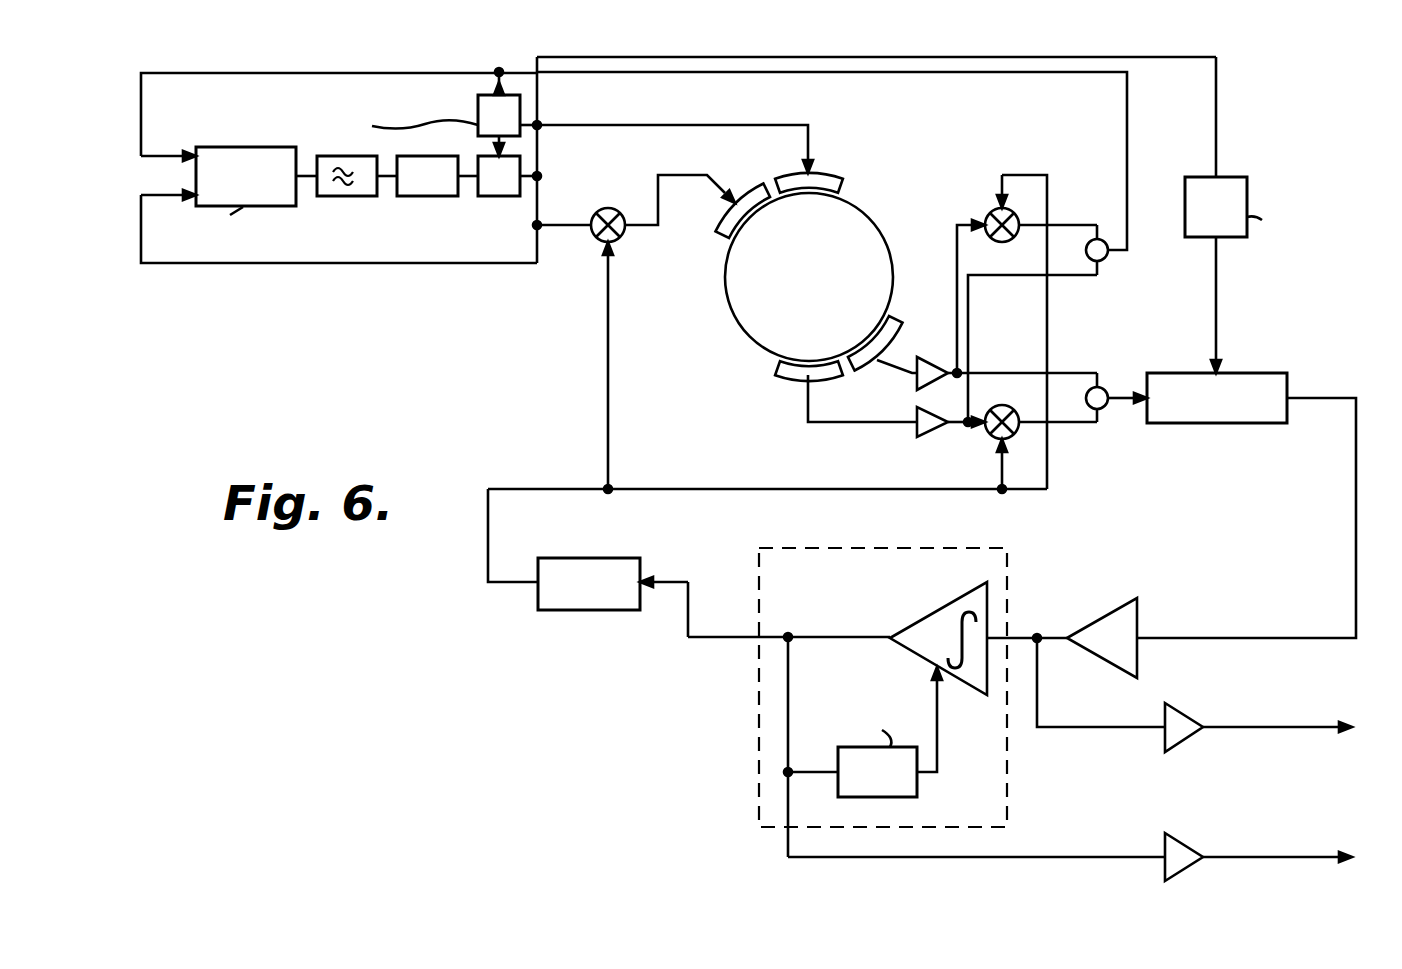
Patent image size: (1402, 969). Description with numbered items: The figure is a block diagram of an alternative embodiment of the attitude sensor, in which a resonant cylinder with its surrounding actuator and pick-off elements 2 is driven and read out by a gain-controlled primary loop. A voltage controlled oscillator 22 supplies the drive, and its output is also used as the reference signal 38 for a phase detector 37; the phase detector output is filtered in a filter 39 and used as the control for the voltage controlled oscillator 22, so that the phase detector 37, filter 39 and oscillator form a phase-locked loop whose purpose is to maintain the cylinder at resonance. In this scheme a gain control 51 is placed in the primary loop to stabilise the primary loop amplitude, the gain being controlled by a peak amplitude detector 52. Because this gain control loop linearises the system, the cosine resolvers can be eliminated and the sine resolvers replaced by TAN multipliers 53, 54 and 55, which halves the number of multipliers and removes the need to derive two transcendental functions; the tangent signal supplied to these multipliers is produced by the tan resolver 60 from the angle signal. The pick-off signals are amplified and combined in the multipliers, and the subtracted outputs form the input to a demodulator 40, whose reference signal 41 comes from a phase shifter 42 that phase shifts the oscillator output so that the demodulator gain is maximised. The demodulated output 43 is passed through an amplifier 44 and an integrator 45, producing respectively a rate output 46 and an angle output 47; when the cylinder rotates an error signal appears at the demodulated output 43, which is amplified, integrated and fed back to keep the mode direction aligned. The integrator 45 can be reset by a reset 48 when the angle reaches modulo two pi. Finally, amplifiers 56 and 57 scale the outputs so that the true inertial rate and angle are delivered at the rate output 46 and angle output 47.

The electrodes / sensing plates around sphere 2 is at (752, 190).
The voltage controlled oscillator 22 is at (428, 197).
The phase detector 37 is at (229, 146).
The reference signal 38 is at (284, 264).
The filter 39 is at (334, 197).
The demodulator 40 is at (1258, 373).
The reference signal 41 is at (1216, 284).
The phase shifter 42 is at (1247, 201).
The demodulated output 43 is at (1356, 508).
The amplifier 44 is at (1100, 618).
The integrator 45 is at (928, 616).
The rate output 46 is at (1294, 728).
The angle output 47 is at (1294, 858).
The reset 48 is at (917, 785).
The gain control 51 is at (506, 198).
The peak amplitude detector 52 is at (478, 107).
The TAN multiplier 53 is at (608, 207).
The TAN multiplier 54 is at (1002, 243).
The TAN multiplier 55 is at (1012, 383).
The amplifier 56 is at (1190, 717).
The amplifier 57 is at (1190, 847).
The tan resolver 60 is at (540, 608).